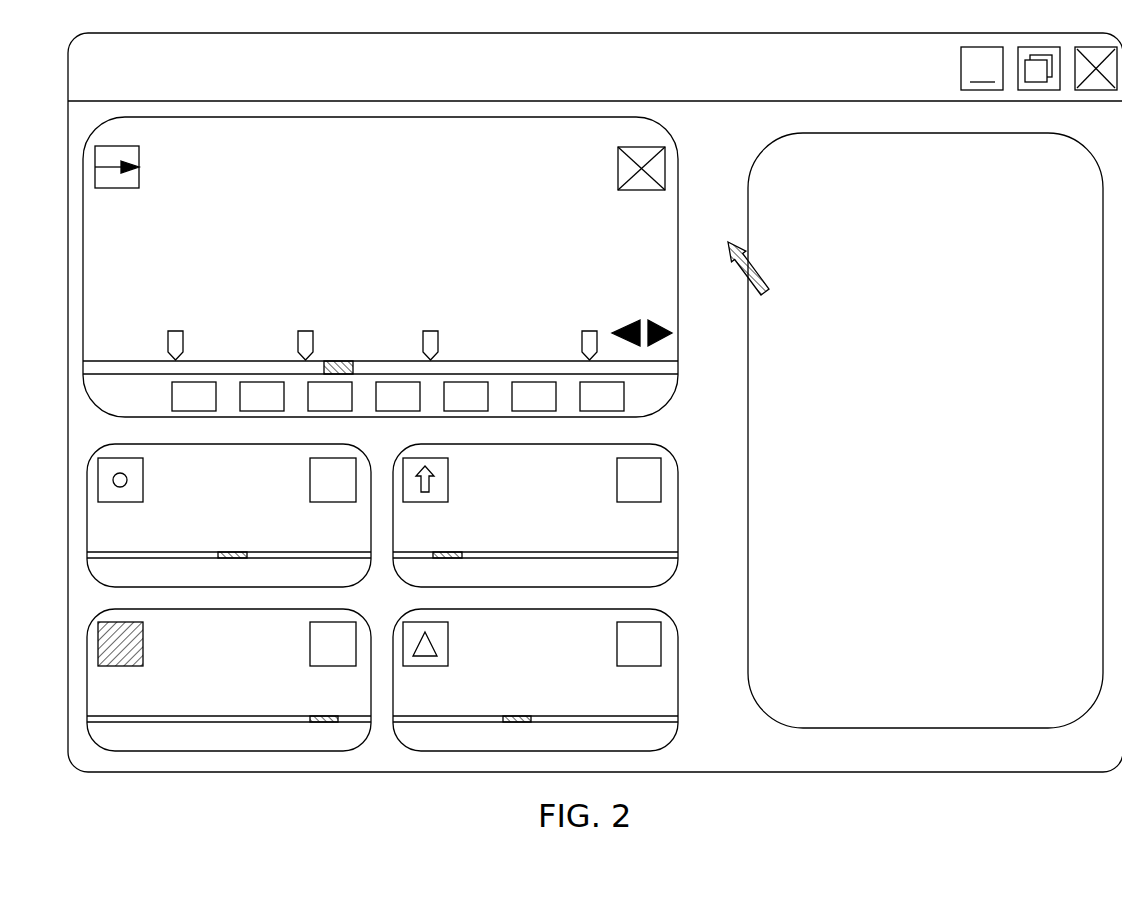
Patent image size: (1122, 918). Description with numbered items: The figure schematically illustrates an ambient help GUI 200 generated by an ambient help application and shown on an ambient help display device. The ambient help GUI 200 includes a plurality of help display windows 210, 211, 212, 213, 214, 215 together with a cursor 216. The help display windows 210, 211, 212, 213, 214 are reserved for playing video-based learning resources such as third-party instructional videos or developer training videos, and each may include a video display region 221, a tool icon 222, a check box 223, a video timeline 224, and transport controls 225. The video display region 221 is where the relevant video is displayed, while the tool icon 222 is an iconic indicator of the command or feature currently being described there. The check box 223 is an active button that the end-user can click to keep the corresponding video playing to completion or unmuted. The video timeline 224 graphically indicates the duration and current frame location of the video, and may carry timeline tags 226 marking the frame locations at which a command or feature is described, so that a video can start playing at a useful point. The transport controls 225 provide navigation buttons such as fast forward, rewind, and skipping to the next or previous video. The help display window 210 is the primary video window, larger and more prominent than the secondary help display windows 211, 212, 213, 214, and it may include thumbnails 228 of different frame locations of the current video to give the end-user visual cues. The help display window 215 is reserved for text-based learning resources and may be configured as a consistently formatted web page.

The ambient help GUI 200 is at (595, 402).
The help display window 210 is at (678, 262).
The help display window 211 is at (678, 503).
The help display window 212 is at (678, 673).
The help display window 213 is at (223, 444).
The help display window 214 is at (223, 609).
The help display window 215 is at (916, 133).
The cursor 216 is at (765, 292).
The video display region 221 is at (371, 450).
The tool icon 222 is at (139, 158).
The check box 223 is at (665, 176).
The video timeline 224 is at (552, 360).
The transport controls 225 is at (640, 300).
The timeline tags 226 is at (172, 350).
The thumbnails 228 is at (645, 393).